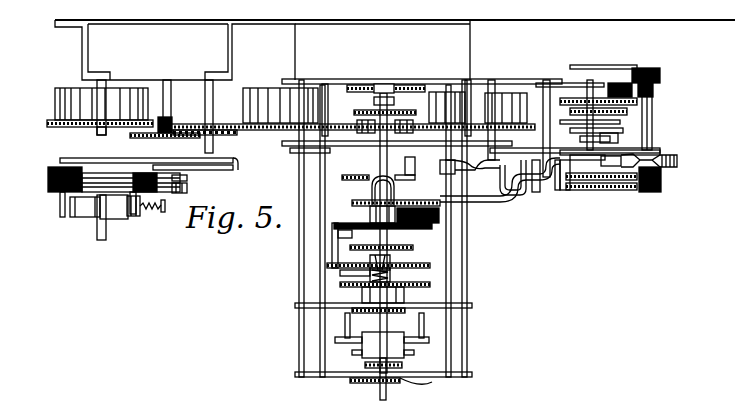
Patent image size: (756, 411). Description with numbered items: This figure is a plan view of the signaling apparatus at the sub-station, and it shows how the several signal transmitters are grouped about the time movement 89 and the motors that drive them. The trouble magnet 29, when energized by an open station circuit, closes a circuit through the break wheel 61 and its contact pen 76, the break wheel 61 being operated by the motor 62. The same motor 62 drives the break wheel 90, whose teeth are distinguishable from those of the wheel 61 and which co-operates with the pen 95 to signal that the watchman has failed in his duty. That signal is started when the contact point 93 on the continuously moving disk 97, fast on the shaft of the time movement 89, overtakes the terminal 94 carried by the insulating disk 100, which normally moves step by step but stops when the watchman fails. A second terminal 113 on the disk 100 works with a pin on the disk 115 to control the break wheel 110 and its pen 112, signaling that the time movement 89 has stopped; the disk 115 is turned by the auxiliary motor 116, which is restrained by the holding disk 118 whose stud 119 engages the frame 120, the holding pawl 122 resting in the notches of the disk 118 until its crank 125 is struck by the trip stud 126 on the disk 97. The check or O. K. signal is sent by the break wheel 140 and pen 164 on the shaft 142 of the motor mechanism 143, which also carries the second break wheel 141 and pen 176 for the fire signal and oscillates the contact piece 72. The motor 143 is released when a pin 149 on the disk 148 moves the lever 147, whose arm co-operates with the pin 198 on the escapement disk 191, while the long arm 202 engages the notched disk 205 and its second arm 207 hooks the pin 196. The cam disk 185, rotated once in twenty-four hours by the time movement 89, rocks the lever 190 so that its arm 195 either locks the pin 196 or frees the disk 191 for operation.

The trouble magnet 29 is at (80, 218).
The break wheel 61 is at (187, 177).
The motor 62 is at (55, 98).
The contact piece 72 is at (658, 84).
The contact pen 76 is at (140, 175).
The time movement 89 is at (410, 85).
The break wheel 90 is at (187, 188).
The contact point 93 is at (336, 245).
The terminal 94 is at (332, 235).
The pen 95 is at (132, 180).
The disk 97 is at (432, 265).
The disk 100 is at (437, 218).
The break wheel 110 is at (168, 208).
The pen 112 is at (138, 200).
The second terminal 113 is at (352, 250).
The disk 115 is at (392, 273).
The auxiliary motor 116 is at (335, 377).
The holding disk 118 is at (430, 286).
The stud 119 is at (366, 313).
The frame 120 is at (297, 306).
The holding pawl 122 is at (391, 297).
The crank 125 is at (340, 273).
The trip stud 126 is at (370, 262).
The break wheel 140 is at (566, 192).
The second break wheel 141 is at (572, 182).
The shaft 142 is at (600, 191).
The motor mechanism 143 is at (653, 136).
The lever 147 is at (455, 162).
The disk 148 is at (345, 157).
The pin 149 is at (360, 172).
The pen 164 is at (640, 193).
The pen 176 is at (643, 194).
The cam disk 185 is at (370, 198).
The lever 190 is at (484, 198).
The escapement disk 191 is at (642, 126).
The arm 195 is at (517, 196).
The pin 196 is at (640, 144).
The pin 198 is at (640, 117).
The long arm 202 is at (568, 160).
The disk 205 is at (548, 200).
The second arm 207 is at (557, 170).